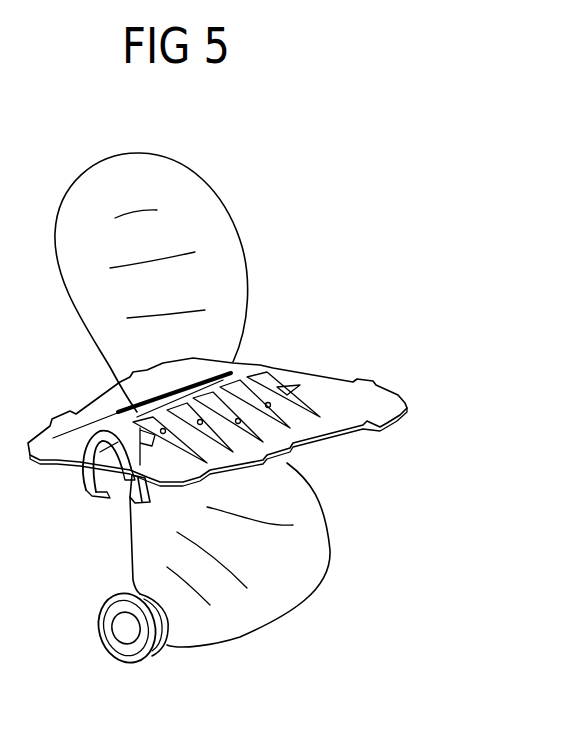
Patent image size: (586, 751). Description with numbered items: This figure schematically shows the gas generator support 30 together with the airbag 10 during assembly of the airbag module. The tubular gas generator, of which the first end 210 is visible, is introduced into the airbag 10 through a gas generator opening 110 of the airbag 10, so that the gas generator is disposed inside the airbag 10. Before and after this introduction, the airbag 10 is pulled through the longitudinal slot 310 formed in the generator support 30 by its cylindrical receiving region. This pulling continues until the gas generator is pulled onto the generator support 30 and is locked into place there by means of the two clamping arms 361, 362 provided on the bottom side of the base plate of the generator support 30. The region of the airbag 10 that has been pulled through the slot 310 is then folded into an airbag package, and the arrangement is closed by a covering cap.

The airbag 10 is at (325, 565).
The gas generator opening 110 is at (118, 585).
The first end 210 is at (159, 637).
The gas generator support 30 is at (370, 407).
The longitudinal slot 310 is at (233, 362).
The clamping arm 361 is at (90, 480).
The clamping arm 362 is at (130, 505).